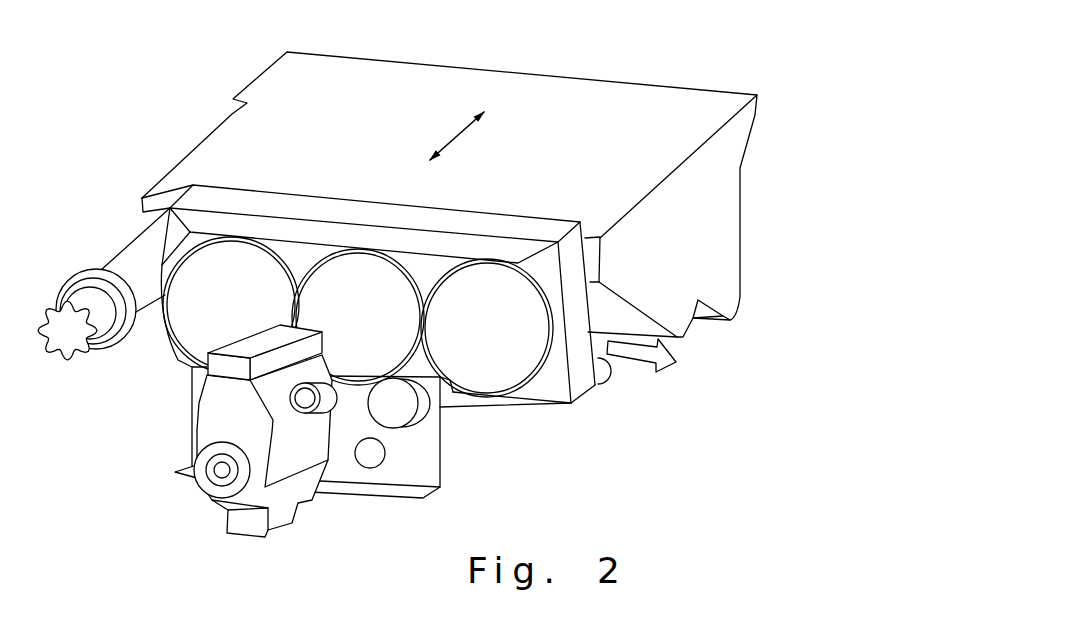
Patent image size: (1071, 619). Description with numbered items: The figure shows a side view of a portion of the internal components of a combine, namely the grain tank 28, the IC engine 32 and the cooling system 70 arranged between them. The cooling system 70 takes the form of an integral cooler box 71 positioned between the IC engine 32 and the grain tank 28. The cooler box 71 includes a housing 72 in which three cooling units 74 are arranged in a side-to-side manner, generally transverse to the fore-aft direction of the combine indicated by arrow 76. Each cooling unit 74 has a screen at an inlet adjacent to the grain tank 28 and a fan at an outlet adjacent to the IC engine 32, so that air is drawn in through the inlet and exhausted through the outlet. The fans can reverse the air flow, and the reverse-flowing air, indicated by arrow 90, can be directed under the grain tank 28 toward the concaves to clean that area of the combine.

The grain tank 28 is at (676, 100).
The IC engine 32 is at (309, 507).
The cooling system 70 is at (367, 355).
The cooler box 71 is at (367, 355).
The housing 72 is at (192, 197).
The cooling unit 74 is at (208, 316).
The arrow 76 is at (457, 140).
The arrow 90 is at (637, 358).